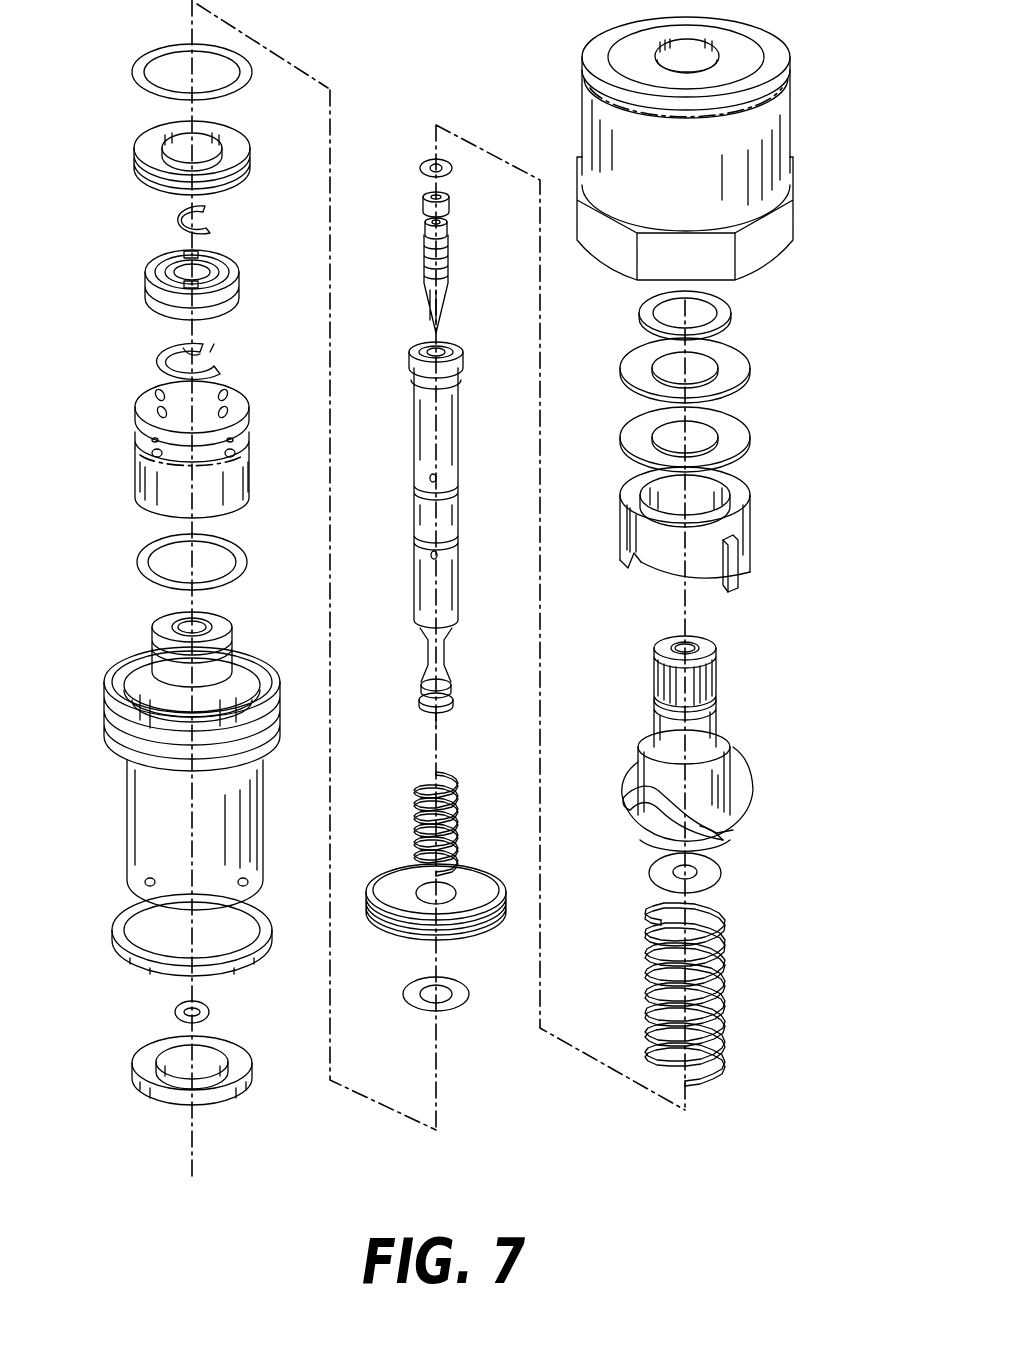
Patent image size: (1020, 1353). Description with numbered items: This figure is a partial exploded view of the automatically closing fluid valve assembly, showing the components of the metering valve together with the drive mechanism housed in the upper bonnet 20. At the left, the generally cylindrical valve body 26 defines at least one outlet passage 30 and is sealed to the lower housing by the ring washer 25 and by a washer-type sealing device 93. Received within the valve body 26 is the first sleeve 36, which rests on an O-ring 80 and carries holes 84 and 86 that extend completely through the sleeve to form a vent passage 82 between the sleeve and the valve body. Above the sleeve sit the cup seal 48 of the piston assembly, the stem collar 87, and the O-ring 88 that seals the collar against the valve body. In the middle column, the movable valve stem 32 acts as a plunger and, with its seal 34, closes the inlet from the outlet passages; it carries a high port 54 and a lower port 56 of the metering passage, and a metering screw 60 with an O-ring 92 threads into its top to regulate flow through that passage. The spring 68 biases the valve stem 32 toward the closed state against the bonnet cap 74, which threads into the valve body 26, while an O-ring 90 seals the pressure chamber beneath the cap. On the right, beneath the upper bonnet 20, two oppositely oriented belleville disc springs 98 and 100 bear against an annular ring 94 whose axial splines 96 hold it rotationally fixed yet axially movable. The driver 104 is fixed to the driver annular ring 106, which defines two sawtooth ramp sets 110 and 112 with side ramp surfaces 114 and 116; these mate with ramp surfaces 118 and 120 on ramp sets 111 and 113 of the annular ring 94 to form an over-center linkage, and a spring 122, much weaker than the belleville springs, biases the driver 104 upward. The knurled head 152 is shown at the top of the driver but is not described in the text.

The upper bonnet 20 is at (790, 98).
The ring washer 25 is at (113, 940).
The valve body 26 is at (140, 810).
The outlet passage 30 is at (150, 885).
The valve stem 32 is at (412, 450).
The seal 34 is at (232, 640).
The first sleeve 36 is at (140, 477).
The cup seal 48 is at (239, 278).
The high port 54 is at (437, 478).
The lower port 56 is at (438, 555).
The metering screw 60 is at (448, 258).
The spring 68 is at (458, 790).
The bonnet cap 74 is at (470, 920).
The O-ring 80 is at (247, 570).
The vent passage 82 is at (137, 437).
The hole 84 is at (155, 390).
The hole 86 is at (156, 412).
The stem collar 87 is at (250, 165).
The O-ring 88 is at (244, 86).
The O-ring 90 is at (455, 1005).
The O-ring 92 is at (450, 172).
The sealing device 93 is at (135, 1090).
The annular ring 94 is at (750, 530).
The axial splines 96 is at (738, 590).
The belleville disc spring 98 is at (750, 440).
The belleville disc spring 100 is at (750, 372).
The driver 104 is at (716, 715).
The driver annular ring 106 is at (752, 820).
The ramp set 110 is at (637, 800).
The ramp set 111 is at (622, 540).
The ramp set 112 is at (735, 760).
The ramp set 113 is at (738, 570).
The side ramp surface 114 is at (710, 827).
The side ramp surface 116 is at (628, 805).
The mating ramp surface 118 is at (632, 575).
The mating ramp surface 120 is at (705, 582).
The spring 122 is at (727, 970).
The knurled head 152 is at (716, 665).